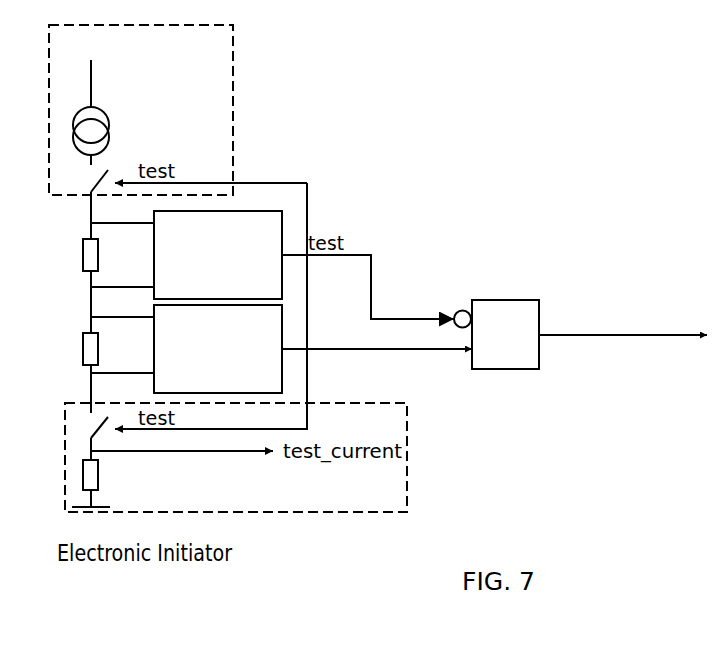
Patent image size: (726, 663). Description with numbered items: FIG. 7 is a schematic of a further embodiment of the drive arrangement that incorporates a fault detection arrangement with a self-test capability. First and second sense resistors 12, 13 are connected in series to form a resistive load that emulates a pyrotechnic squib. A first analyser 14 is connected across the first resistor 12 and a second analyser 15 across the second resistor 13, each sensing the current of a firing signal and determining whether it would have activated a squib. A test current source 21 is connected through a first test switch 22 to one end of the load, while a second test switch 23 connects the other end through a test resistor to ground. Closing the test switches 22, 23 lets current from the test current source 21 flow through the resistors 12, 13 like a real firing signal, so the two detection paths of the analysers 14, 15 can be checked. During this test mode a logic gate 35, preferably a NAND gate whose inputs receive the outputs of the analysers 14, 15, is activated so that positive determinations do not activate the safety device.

The test current source 21 is at (100, 110).
The first test switch 22 is at (78, 180).
The first sense resistor 12 is at (90, 252).
The second sense resistor 13 is at (90, 347).
The first analyser 14 is at (255, 210).
The second analyser 15 is at (282, 367).
The second test switch 23 is at (90, 425).
The logic gate 35 is at (506, 300).